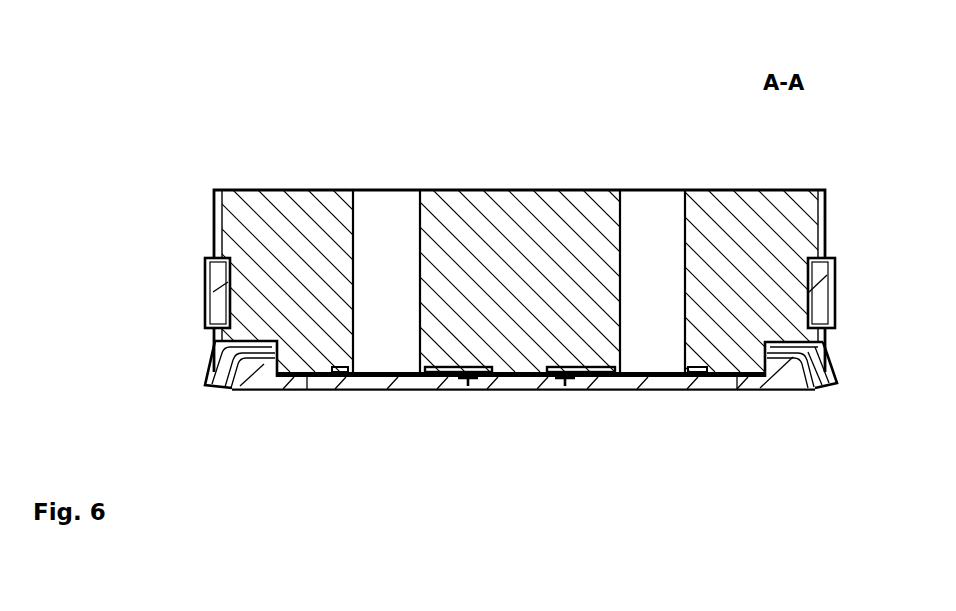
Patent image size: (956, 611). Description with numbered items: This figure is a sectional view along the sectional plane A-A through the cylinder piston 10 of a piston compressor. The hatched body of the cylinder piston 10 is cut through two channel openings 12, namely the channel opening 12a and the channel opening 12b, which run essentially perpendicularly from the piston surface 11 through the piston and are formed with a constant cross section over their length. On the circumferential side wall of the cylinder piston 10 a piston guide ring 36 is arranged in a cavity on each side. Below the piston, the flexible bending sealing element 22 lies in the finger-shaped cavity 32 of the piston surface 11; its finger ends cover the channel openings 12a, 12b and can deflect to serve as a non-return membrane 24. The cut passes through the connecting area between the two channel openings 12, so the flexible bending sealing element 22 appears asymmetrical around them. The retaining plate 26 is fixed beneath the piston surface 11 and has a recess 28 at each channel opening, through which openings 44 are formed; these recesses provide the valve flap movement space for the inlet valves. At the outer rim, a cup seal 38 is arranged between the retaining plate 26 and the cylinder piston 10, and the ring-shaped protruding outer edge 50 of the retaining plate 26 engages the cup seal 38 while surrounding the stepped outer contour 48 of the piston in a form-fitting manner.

The cylinder piston 10 is at (240, 217).
The piston surface 11 is at (512, 396).
The channel openings 12 is at (496, 198).
The channel opening 12a is at (386, 220).
The channel opening 12b is at (652, 224).
The flexible bending sealing element 22 is at (519, 467).
The non-return membrane 24 is at (502, 467).
The retaining plate 26 is at (278, 390).
The recess 28 is at (479, 456).
The cavity 32 is at (502, 467).
The piston guide ring 36 is at (205, 285).
The cup seal 38 is at (212, 370).
The openings 44 is at (588, 382).
The stepped outer contour 48 is at (733, 379).
The ring-shaped protruding outer edge 50 is at (790, 374).